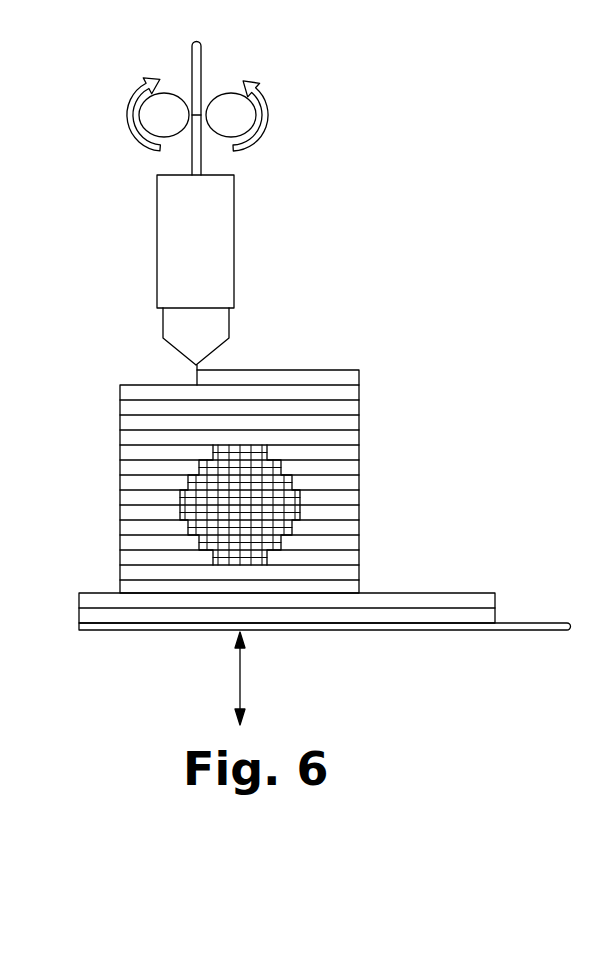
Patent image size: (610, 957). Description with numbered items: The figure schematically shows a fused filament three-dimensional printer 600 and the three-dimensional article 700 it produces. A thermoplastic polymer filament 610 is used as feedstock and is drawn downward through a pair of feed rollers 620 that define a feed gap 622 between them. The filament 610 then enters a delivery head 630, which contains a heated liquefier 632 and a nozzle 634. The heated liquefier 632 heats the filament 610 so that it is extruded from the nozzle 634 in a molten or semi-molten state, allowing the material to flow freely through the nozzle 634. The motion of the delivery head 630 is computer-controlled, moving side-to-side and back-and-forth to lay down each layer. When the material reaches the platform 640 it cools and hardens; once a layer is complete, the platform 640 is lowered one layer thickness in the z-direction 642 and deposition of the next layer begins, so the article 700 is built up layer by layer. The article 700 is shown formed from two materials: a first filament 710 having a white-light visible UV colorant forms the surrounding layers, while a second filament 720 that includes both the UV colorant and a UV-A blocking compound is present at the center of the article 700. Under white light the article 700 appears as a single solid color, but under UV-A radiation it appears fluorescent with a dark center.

The 3D printer 600 is at (383, 190).
The thermoplastic polymer filament 610 is at (192, 47).
The feed rollers 620 is at (152, 108).
The feed gap 622 is at (206, 117).
The delivery head 630 is at (157, 248).
The heated liquefier 632 is at (185, 203).
The nozzle 634 is at (195, 371).
The platform 640 is at (415, 632).
The z-direction 642 is at (256, 678).
The 3D article 700 is at (285, 466).
The first filament 710 is at (330, 435).
The second filament 720 is at (253, 506).